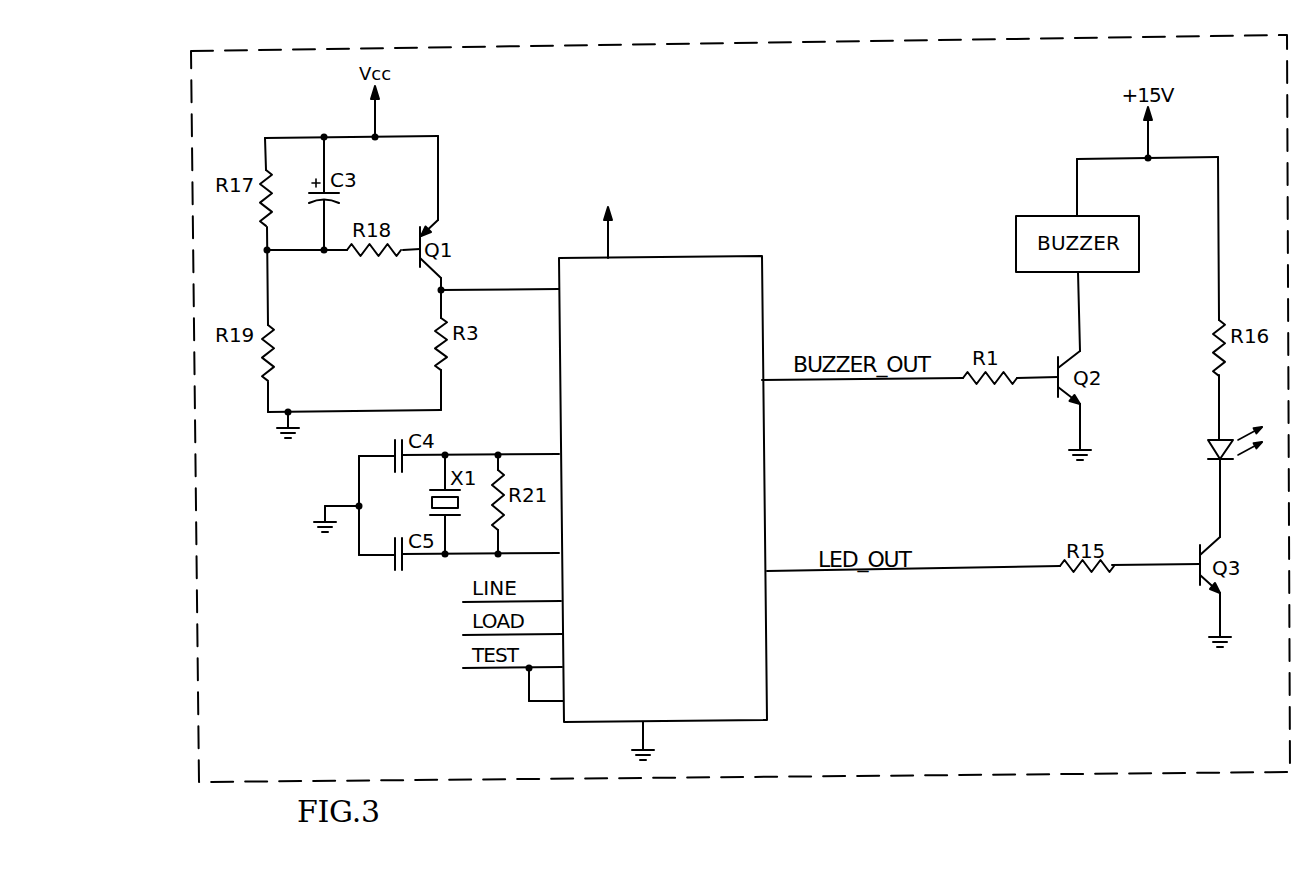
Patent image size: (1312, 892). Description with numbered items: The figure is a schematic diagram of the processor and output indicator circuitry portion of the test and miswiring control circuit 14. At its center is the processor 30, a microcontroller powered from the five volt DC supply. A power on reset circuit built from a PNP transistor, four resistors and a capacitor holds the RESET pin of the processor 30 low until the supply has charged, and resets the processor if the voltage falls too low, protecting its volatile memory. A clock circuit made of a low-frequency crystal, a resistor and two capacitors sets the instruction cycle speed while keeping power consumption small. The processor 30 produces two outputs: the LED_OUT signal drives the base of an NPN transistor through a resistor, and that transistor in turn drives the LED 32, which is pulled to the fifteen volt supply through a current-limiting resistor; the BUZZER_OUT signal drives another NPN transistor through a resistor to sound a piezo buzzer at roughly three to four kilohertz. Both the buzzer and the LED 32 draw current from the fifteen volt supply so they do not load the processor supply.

The processor 30 is at (700, 257).
The LED 32 is at (1205, 450).
The test and miswiring control circuit 14 is at (1107, 768).